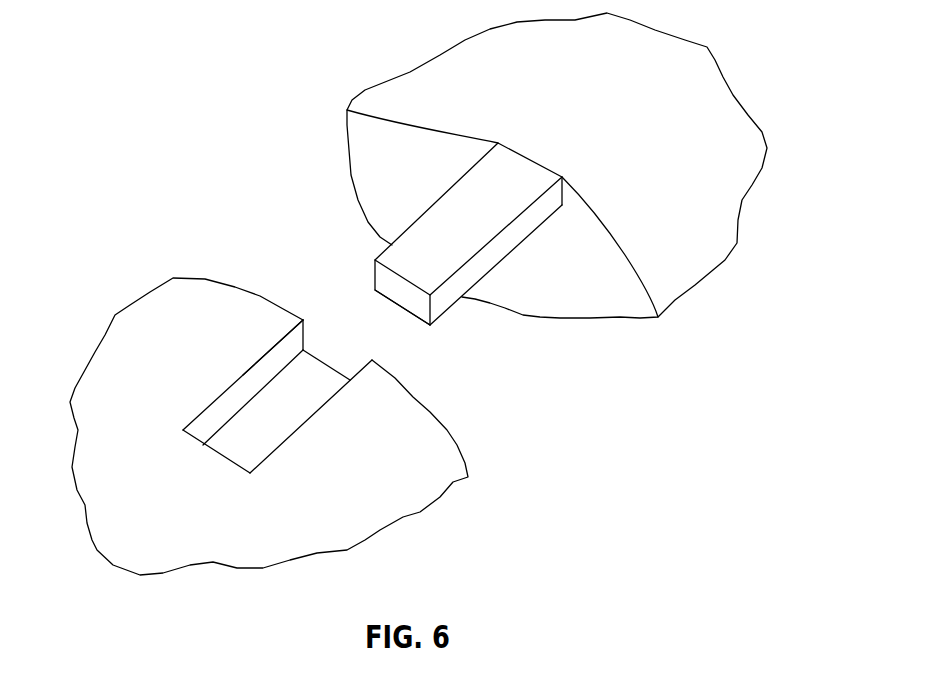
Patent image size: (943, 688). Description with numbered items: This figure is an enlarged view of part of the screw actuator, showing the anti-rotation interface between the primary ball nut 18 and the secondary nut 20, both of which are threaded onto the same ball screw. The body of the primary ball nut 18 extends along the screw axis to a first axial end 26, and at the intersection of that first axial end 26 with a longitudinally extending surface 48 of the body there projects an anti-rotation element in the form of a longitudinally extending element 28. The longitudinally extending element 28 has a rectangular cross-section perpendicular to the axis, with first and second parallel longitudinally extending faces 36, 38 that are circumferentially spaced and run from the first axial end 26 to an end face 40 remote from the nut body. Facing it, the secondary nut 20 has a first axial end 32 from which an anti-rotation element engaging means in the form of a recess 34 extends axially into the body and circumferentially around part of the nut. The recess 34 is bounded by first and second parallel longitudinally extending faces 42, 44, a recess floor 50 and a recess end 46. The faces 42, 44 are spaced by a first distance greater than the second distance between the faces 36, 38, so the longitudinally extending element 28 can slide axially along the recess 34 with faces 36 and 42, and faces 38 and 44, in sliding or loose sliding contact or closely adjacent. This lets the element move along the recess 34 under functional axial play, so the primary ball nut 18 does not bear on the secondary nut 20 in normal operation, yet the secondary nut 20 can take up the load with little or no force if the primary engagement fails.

The primary ball nut 18 is at (735, 48).
The secondary nut 20 is at (105, 576).
The first axial end 26 is at (592, 267).
The longitudinally extending element 28 is at (432, 255).
The first axial end 32 is at (188, 338).
The recess 34 is at (311, 436).
The first longitudinally extending face 36 is at (375, 277).
The second longitudinally extending face 38 is at (460, 280).
The end face 40 is at (400, 292).
The first longitudinally extending face 42 is at (253, 377).
The second longitudinally extending face 44 is at (317, 407).
The recess end 46 is at (222, 453).
The longitudinally extending surface 48 is at (670, 138).
The recess floor 50 is at (247, 427).